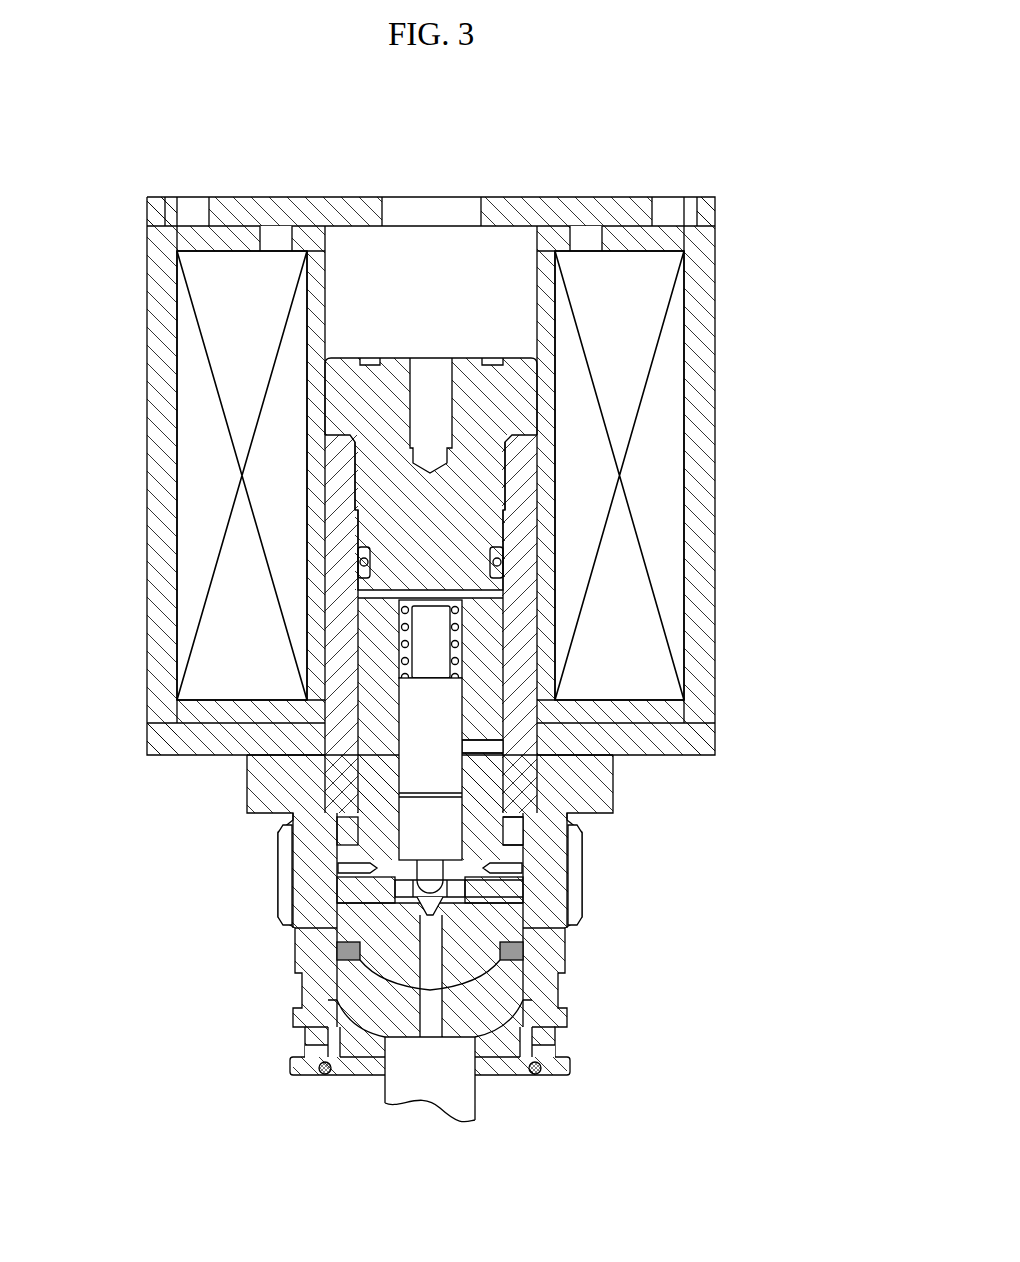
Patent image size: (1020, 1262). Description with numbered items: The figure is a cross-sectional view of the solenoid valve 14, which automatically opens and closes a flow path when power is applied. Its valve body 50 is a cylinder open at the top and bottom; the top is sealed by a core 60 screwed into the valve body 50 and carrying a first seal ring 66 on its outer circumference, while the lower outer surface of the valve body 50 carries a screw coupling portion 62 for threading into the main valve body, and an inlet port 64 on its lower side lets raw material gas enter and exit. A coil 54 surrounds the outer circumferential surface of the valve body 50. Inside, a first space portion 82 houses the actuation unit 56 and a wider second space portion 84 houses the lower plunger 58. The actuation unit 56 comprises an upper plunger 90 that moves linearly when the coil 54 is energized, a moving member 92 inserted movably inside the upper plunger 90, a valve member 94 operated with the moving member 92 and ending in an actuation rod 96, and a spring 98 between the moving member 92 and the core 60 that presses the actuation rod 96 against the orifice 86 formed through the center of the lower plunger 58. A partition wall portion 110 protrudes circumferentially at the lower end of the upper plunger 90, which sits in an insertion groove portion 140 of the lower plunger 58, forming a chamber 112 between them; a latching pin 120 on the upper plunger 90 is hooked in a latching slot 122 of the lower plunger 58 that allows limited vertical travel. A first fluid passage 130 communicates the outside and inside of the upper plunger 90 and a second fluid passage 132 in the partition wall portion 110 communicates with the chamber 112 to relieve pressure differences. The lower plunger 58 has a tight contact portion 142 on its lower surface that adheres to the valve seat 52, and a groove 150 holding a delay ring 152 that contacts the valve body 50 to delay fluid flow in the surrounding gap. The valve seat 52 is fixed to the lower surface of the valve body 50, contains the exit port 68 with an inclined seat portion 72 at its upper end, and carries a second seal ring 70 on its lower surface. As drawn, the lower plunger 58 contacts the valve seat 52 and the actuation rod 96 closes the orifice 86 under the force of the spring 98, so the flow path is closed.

The solenoid valve 14 is at (779, 118).
The valve body 50 is at (522, 607).
The valve seat 52 is at (503, 1064).
The coil 54 is at (663, 370).
The actuation unit 56 is at (513, 722).
The lower plunger 58 is at (485, 992).
The core 60 is at (455, 528).
The screw coupling portion 62 is at (578, 908).
The inlet port 64 is at (550, 1050).
The first seal ring 66 is at (498, 562).
The exit port 68 is at (428, 1075).
The second seal ring 70 is at (535, 1076).
The seat portion 72 is at (368, 1078).
The first space portion 82 is at (538, 658).
The second space portion 84 is at (340, 925).
The orifice 86 is at (325, 1040).
The upper plunger 90 is at (377, 670).
The moving member 92 is at (420, 757).
The valve member 94 is at (410, 817).
The actuation rod 96 is at (370, 876).
The spring 98 is at (405, 628).
The partition wall portion 110 is at (350, 886).
The chamber 112 is at (510, 985).
The latching pin 120 is at (505, 872).
The latching slot 122 is at (515, 887).
The first fluid passage 130 is at (490, 747).
The second fluid passage 132 is at (520, 951).
The insertion groove portion 140 is at (355, 845).
The tight contact portion 142 is at (545, 1020).
The groove 150 is at (345, 1000).
The delay ring 152 is at (350, 951).